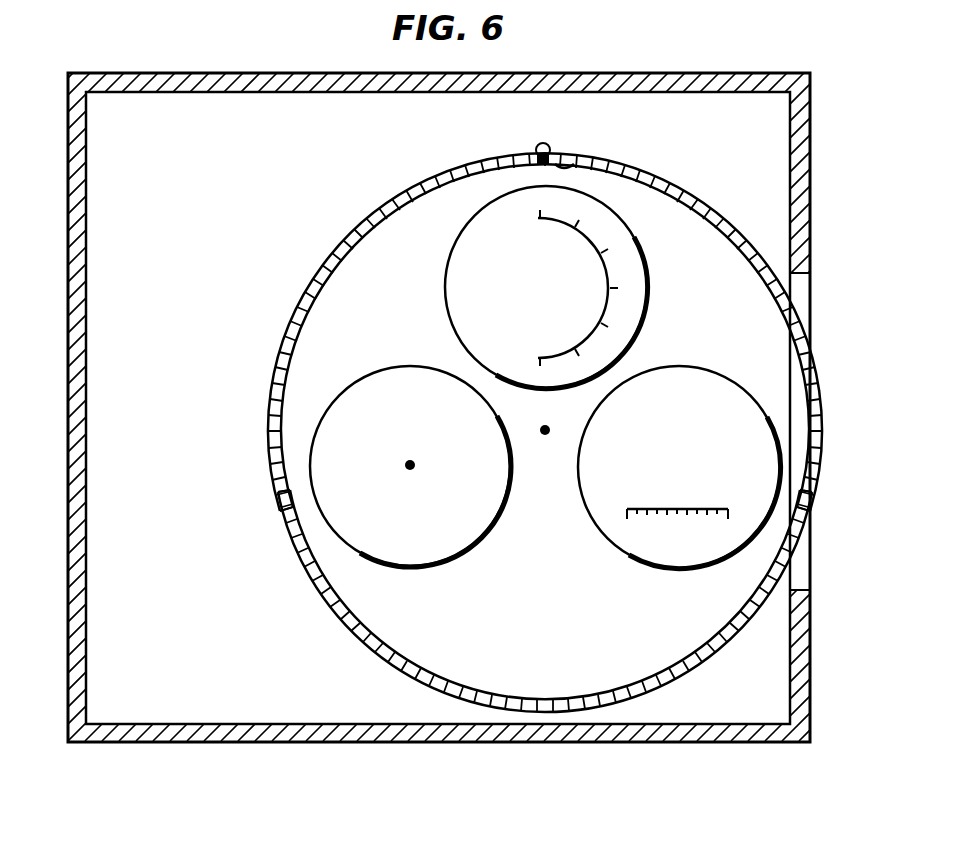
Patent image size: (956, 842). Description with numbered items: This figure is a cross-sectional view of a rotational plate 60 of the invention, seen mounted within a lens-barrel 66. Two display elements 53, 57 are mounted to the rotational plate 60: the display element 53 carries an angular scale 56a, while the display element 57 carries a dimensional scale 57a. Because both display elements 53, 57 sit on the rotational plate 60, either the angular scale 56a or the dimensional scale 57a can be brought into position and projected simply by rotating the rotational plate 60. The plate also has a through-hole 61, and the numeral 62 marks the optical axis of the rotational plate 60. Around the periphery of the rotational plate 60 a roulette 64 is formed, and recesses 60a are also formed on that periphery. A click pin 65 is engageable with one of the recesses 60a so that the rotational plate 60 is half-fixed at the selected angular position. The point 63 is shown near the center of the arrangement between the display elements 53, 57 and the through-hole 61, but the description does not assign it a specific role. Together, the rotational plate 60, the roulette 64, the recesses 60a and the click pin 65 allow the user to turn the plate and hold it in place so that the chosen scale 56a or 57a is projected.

The display element 53 is at (445, 281).
The angular scale 56a is at (606, 288).
The display element 57 is at (633, 559).
The dimensional scale 57a is at (688, 503).
The rotational plate 60 is at (341, 303).
The recesses 60a is at (575, 157).
The through-hole 61 is at (428, 533).
The optical axis 62 is at (409, 463).
The pivot center 63 is at (546, 436).
The roulette 64 is at (699, 210).
The click pin 65 is at (536, 146).
The lens-barrel 66 is at (445, 744).